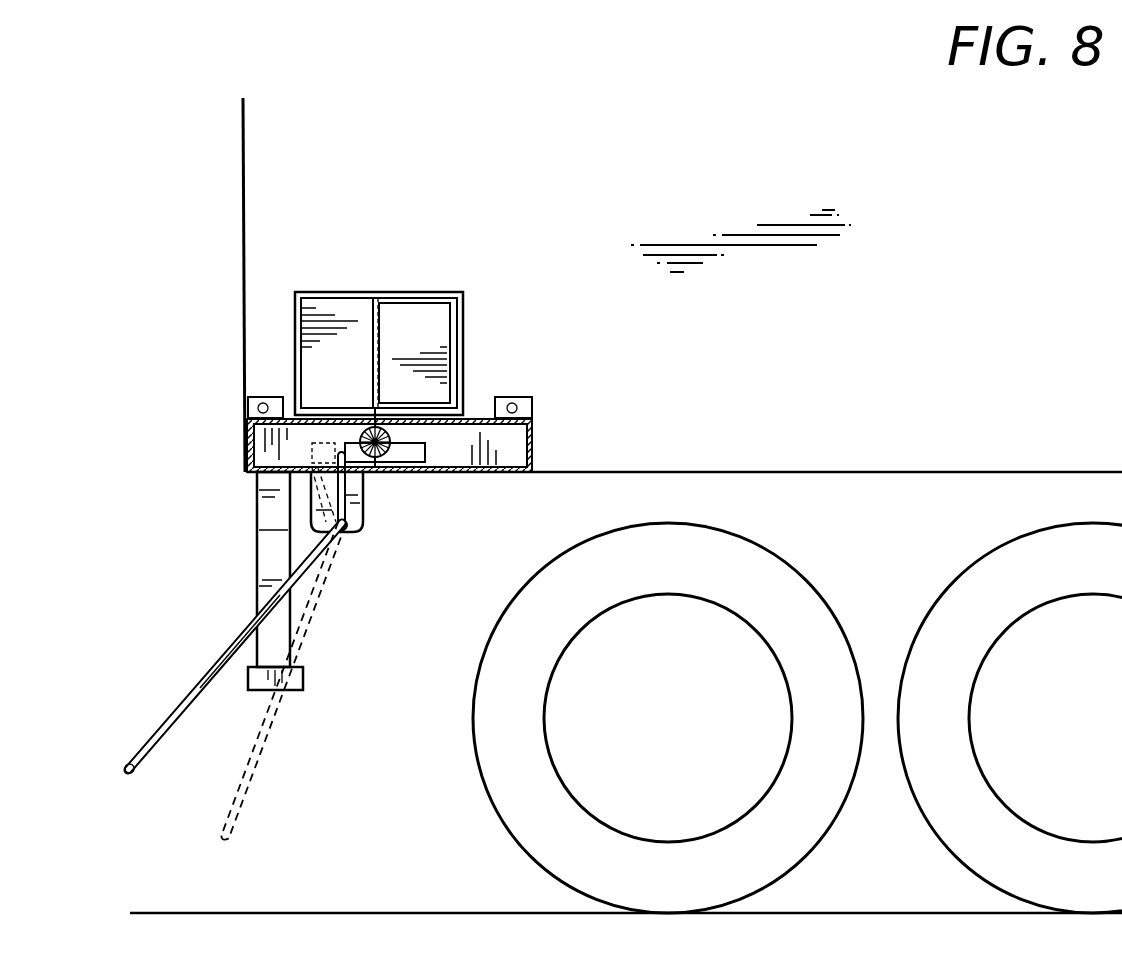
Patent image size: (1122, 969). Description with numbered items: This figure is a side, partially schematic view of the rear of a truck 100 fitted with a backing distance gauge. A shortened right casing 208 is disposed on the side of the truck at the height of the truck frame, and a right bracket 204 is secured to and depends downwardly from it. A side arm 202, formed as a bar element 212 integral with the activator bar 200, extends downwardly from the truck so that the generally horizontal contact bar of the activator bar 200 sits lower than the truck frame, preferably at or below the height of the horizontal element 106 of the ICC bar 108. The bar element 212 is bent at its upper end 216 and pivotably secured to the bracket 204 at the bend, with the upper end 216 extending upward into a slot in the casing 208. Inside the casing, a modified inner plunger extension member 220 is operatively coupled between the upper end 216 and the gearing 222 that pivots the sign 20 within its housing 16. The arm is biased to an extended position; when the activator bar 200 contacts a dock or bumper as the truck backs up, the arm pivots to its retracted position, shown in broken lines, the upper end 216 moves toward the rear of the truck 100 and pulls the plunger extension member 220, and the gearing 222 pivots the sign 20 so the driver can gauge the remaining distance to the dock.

The truck 100 is at (747, 176).
The equipment box 16 is at (340, 298).
The sign 20 is at (418, 310).
The right casing 208 is at (535, 448).
The gearing 222 is at (392, 436).
The inner plunger extension member 220 is at (425, 447).
The upper end of bar element 216 is at (348, 490).
The right bracket 204 is at (365, 515).
The ICC bar 108 is at (238, 552).
The horizontal element 106 is at (303, 680).
The side arm 202 is at (200, 678).
The bar element 212 is at (168, 726).
The activator bar 200 is at (128, 775).